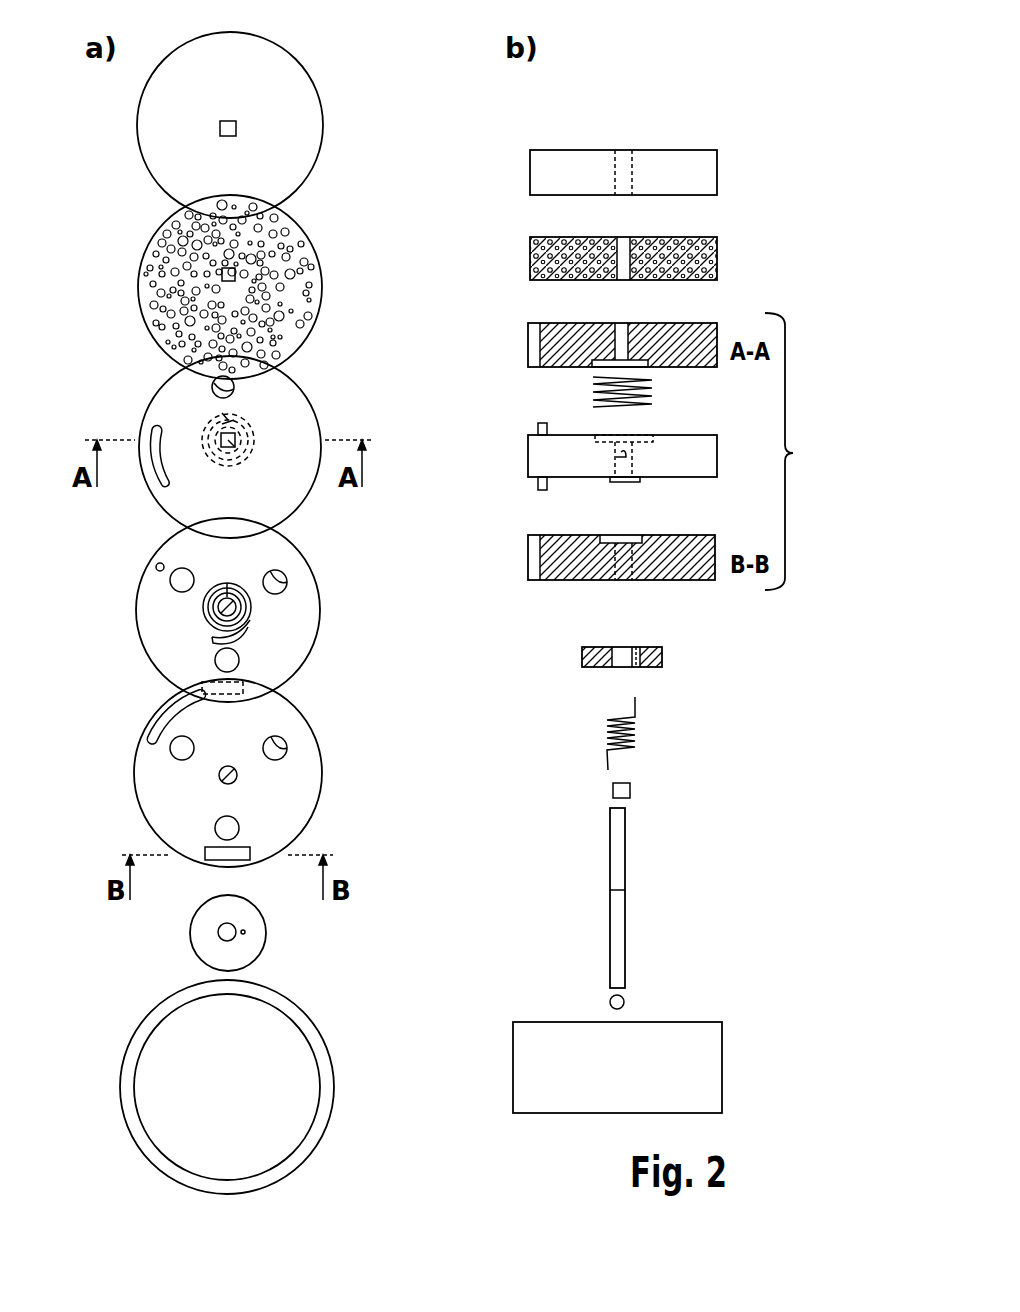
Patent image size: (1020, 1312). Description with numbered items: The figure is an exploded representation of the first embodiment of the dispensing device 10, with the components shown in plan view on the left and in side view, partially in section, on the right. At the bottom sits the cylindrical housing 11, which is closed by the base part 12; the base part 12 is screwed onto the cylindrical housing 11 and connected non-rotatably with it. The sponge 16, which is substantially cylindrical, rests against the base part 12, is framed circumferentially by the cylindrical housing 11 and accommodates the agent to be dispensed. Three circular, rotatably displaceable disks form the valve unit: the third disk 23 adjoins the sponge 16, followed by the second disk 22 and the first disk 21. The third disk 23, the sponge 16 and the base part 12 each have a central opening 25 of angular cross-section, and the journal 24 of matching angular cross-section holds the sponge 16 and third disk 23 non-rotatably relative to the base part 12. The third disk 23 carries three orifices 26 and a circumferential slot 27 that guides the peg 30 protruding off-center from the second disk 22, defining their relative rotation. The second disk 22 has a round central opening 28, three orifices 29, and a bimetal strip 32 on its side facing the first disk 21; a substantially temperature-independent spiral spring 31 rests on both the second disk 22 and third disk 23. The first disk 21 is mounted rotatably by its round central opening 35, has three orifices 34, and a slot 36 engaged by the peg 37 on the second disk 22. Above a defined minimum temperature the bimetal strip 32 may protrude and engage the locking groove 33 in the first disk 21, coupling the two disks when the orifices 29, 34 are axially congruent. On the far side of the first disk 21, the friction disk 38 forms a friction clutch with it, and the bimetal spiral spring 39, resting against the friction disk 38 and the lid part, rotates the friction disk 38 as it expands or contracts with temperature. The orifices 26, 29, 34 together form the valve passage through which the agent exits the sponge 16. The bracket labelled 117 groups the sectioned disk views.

The dispensing device 10 is at (99, 152).
The cylindrical housing 11 is at (330, 1122).
The base part 12 is at (320, 90).
The sponge 16 is at (139, 255).
The first disk 21 is at (320, 795).
The second disk 22 is at (318, 625).
The third disk 23 is at (318, 410).
The journal 24 is at (625, 855).
The central opening 25 is at (237, 124).
The orifices 26 is at (235, 392).
The slot 27 is at (148, 441).
The central opening 28 is at (212, 608).
The orifices 29 is at (283, 581).
The peg 30 is at (156, 563).
The spiral spring 31 is at (221, 413).
The bimetal strip 32 is at (243, 686).
The locking groove 33 is at (250, 847).
The orifices 34 is at (285, 752).
The central opening 35 is at (238, 778).
The slot 36 is at (166, 719).
The peg 37 is at (536, 488).
The friction disk 38 is at (262, 945).
The bimetal spiral spring 39 is at (635, 731).
The disc assembly 117 is at (801, 451).